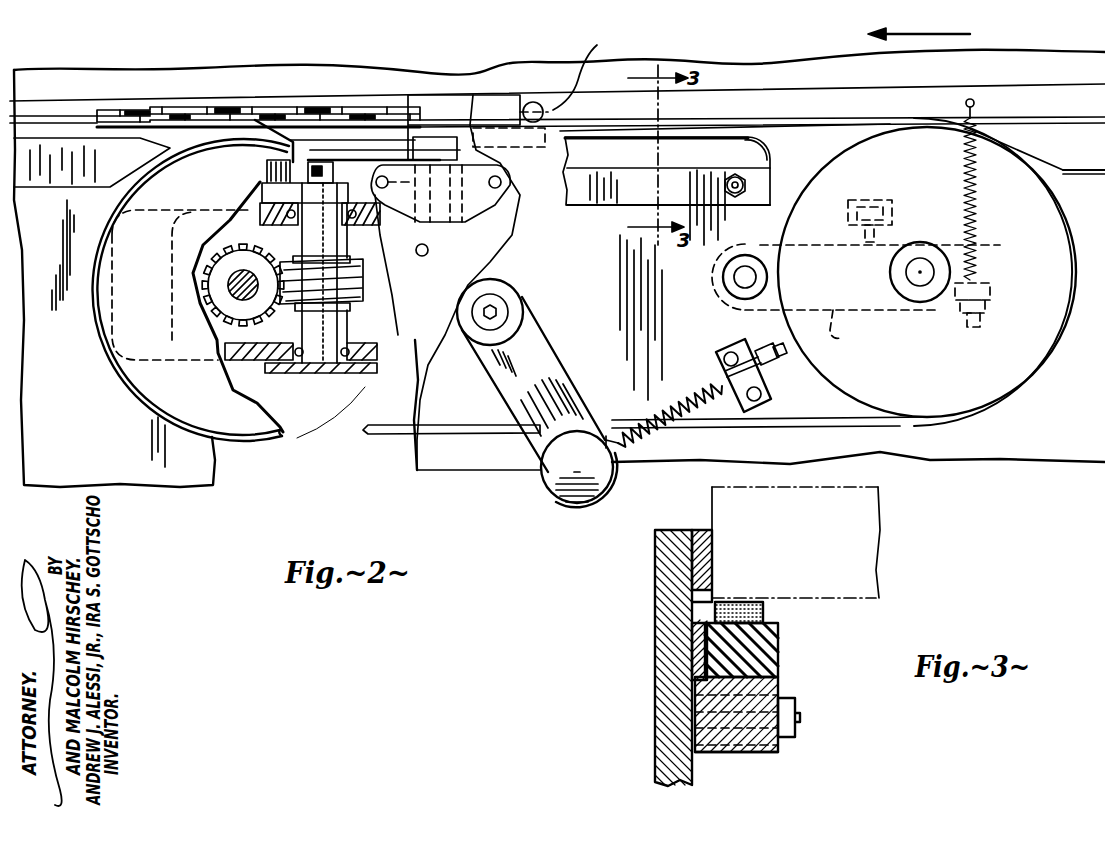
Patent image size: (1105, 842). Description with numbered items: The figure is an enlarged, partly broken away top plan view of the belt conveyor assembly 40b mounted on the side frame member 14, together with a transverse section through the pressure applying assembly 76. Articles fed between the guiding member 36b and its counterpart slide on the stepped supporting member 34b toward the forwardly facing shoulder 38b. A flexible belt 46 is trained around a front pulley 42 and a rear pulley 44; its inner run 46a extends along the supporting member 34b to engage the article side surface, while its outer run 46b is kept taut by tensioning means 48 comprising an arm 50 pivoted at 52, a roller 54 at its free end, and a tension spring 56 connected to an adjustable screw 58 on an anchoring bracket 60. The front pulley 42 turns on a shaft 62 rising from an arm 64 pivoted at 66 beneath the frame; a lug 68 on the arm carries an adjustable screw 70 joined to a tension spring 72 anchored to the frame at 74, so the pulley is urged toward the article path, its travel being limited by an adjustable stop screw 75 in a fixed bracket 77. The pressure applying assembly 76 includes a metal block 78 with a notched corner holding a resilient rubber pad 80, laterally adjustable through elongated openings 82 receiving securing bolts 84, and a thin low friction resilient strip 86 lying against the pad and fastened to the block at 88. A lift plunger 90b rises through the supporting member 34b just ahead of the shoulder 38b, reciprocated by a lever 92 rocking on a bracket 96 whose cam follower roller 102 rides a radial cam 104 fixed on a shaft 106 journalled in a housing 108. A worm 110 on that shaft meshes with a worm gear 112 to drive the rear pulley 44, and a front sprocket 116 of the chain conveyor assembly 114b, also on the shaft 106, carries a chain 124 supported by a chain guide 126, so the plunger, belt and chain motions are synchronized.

In FIG. 2, the side frame member 14 is at (1010, 448).
In FIG. 3, the side frame member 14 is at (665, 694).
In FIG. 2, the supporting member 34b is at (1083, 72).
In FIG. 3, the supporting member 34b is at (700, 566).
In FIG. 2, the guiding member 36b is at (1072, 170).
In FIG. 2, the shoulder 38b is at (578, 86).
In FIG. 2, the belt conveyor assembly 40b is at (295, 463).
In FIG. 2, the front pulley 42 is at (1012, 362).
In FIG. 2, the rear pulley 44 is at (150, 385).
In FIG. 2, the flexible belt 46 is at (783, 426).
In FIG. 2, the inner belt run 46a is at (866, 112).
In FIG. 3, the inner belt run 46a is at (765, 607).
In FIG. 2, the outer belt run 46b is at (462, 432).
In FIG. 2, the tensioning means 48 is at (553, 342).
In FIG. 2, the arm 50 is at (545, 372).
In FIG. 2, the pivot 52 is at (495, 310).
In FIG. 2, the roller 54 is at (548, 492).
In FIG. 2, the tension spring 56 is at (628, 450).
In FIG. 2, the adjustable screw 58 is at (768, 383).
In FIG. 2, the anchoring bracket 60 is at (742, 345).
In FIG. 2, the shaft 62 is at (920, 284).
In FIG. 2, the arm 64 is at (872, 297).
In FIG. 2, the pivot 66 is at (752, 272).
In FIG. 2, the lug 68 is at (990, 296).
In FIG. 2, the adjustable screw 70 is at (972, 320).
In FIG. 2, the tension spring 72 is at (978, 212).
In FIG. 2, the anchor 74 is at (970, 99).
In FIG. 2, the adjustable stop screw 75 is at (876, 228).
In FIG. 2, the pressure applying assembly 76 is at (612, 208).
In FIG. 3, the pressure applying assembly 76 is at (808, 726).
In FIG. 2, the fixed bracket 77 is at (892, 203).
In FIG. 2, the metal block 78 is at (580, 195).
In FIG. 3, the metal block 78 is at (742, 752).
In FIG. 2, the rubber pad 80 is at (752, 152).
In FIG. 3, the rubber pad 80 is at (772, 652).
In FIG. 2, the elongated openings 82 is at (755, 180).
In FIG. 3, the elongated openings 82 is at (672, 664).
In FIG. 2, the securing bolts 84 is at (737, 198).
In FIG. 3, the securing bolts 84 is at (800, 708).
In FIG. 3, the resilient strip 86 is at (700, 618).
In FIG. 2, the strip securing point 88 is at (770, 168).
In FIG. 2, the lift plunger 90b is at (641, 54).
In FIG. 2, the lever 92 is at (466, 130).
In FIG. 2, the bracket 96 is at (463, 218).
In FIG. 2, the cam follower roller 102 is at (325, 170).
In FIG. 2, the radial cam 104 is at (287, 172).
In FIG. 2, the shaft 106 is at (315, 240).
In FIG. 2, the housing 108 is at (385, 338).
In FIG. 2, the worm 110 is at (365, 372).
In FIG. 2, the worm gear 112 is at (248, 314).
In FIG. 2, the chain conveyor assembly 114b is at (230, 60).
In FIG. 2, the front sprocket 116 is at (256, 120).
In FIG. 2, the chain 124 is at (172, 108).
In FIG. 2, the chain guide 126 is at (70, 107).